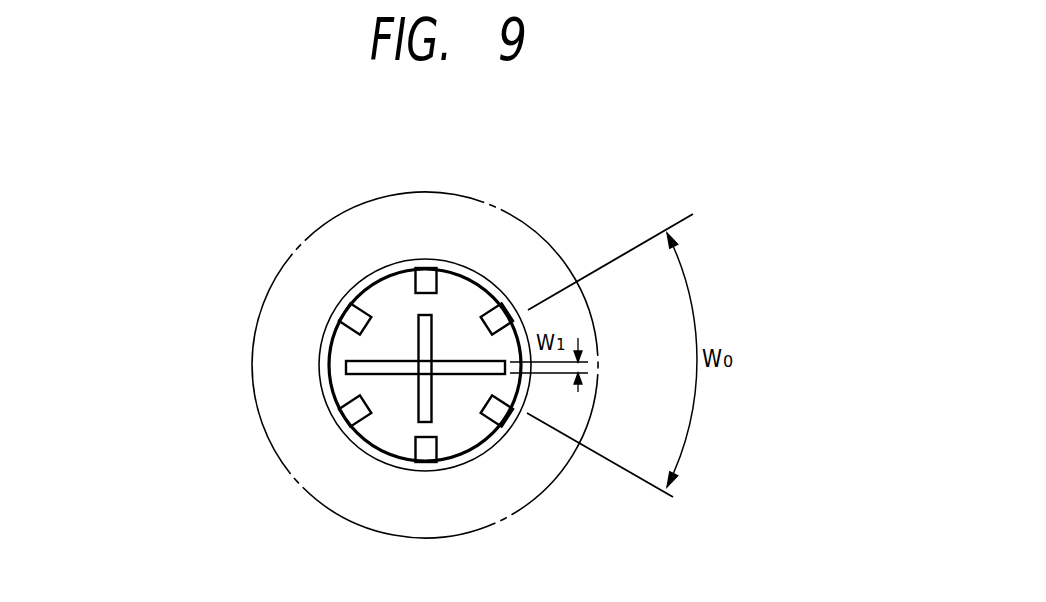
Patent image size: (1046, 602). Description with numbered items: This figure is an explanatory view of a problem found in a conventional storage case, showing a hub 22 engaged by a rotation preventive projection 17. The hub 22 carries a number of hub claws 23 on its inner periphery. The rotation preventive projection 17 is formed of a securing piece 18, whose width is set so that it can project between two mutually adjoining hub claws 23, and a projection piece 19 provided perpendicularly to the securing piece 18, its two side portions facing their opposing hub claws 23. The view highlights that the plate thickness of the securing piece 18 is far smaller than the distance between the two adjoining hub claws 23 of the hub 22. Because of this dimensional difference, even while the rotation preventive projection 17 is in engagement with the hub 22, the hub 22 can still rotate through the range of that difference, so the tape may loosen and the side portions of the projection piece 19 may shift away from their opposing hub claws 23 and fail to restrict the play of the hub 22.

The rotation preventive projection 17 is at (306, 406).
The securing piece 18 is at (346, 372).
The projection piece 19 is at (417, 421).
The hub 22 is at (372, 290).
The hub claws 23 is at (440, 287).